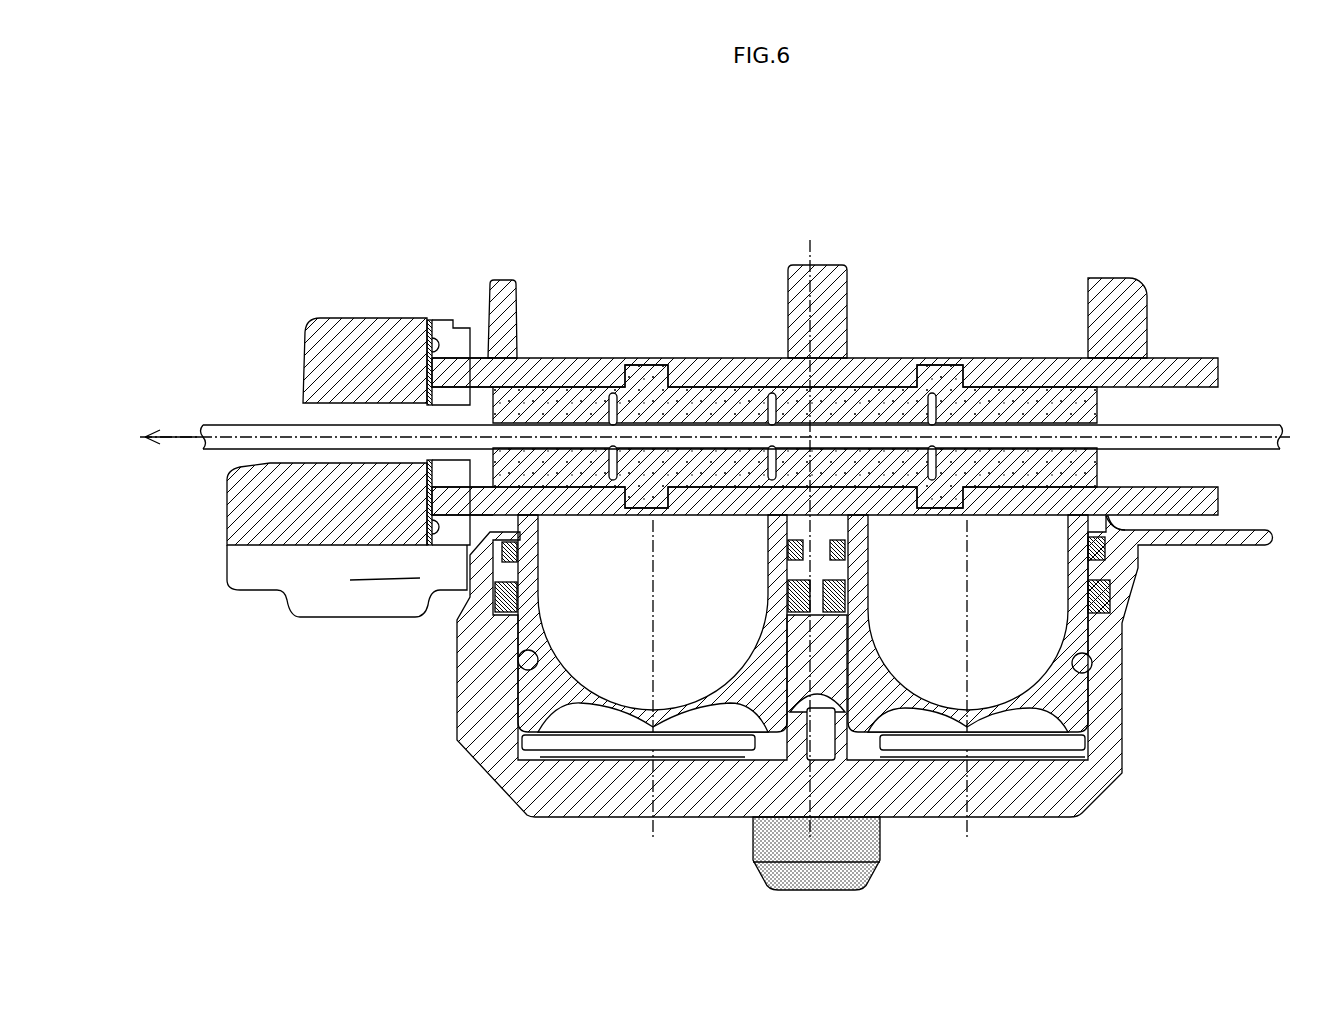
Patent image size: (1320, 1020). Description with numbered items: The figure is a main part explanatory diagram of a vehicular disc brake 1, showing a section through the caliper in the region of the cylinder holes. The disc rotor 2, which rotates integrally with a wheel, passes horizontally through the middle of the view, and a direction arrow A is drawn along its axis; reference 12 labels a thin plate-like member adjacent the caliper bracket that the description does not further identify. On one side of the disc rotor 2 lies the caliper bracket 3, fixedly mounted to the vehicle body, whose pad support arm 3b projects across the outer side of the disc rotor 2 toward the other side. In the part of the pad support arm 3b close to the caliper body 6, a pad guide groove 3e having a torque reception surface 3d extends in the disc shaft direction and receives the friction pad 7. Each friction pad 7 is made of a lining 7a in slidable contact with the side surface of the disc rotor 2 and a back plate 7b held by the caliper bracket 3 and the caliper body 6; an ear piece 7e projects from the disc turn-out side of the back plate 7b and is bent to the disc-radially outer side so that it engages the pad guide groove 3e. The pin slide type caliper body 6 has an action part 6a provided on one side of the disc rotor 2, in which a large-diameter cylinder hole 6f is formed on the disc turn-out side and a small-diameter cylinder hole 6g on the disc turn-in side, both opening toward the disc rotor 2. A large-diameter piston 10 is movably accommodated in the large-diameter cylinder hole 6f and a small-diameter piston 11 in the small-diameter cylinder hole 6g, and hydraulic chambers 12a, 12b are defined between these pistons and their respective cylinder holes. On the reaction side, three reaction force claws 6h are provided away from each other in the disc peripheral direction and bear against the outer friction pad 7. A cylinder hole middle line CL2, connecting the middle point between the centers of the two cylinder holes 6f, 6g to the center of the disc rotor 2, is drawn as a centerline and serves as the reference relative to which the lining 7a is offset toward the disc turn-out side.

The vehicular disc brake 1 is at (771, 181).
The disc rotor 2 is at (1248, 424).
The caliper bracket 3 is at (262, 605).
The pad support arm 3b is at (228, 508).
The torque reception surface 3d is at (427, 350).
The pad guide groove 3e is at (458, 318).
The caliper body 6 is at (578, 835).
The action part 6a is at (905, 800).
The large-diameter cylinder hole 6f is at (522, 665).
The small-diameter cylinder hole 6g is at (1080, 665).
The reaction force claw 6h is at (503, 290).
The friction pad 7 is at (789, 439).
The lining 7a is at (690, 372).
The back plate 7b is at (720, 400).
The ear piece 7e is at (440, 370).
The large-diameter piston 10 is at (765, 628).
The small-diameter piston 11 is at (1072, 600).
The plate 12 is at (430, 320).
The hydraulic chamber 12a is at (690, 752).
The hydraulic chamber 12b is at (1005, 752).
The cylinder hole middle line CL2 is at (800, 258).
The direction A is at (159, 438).